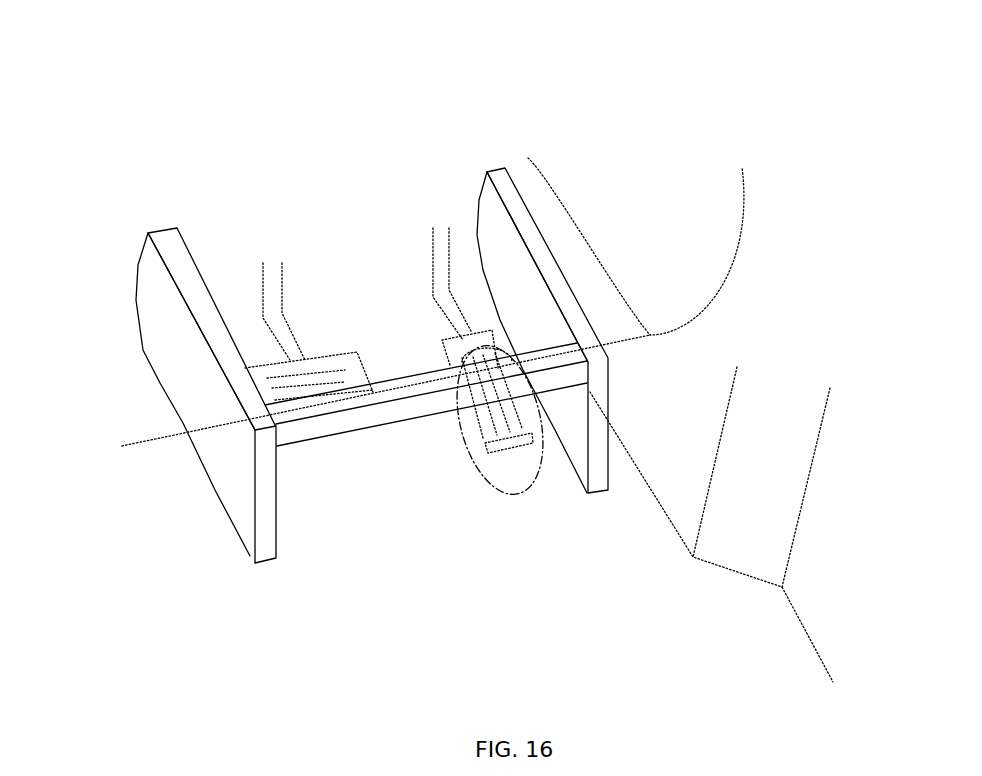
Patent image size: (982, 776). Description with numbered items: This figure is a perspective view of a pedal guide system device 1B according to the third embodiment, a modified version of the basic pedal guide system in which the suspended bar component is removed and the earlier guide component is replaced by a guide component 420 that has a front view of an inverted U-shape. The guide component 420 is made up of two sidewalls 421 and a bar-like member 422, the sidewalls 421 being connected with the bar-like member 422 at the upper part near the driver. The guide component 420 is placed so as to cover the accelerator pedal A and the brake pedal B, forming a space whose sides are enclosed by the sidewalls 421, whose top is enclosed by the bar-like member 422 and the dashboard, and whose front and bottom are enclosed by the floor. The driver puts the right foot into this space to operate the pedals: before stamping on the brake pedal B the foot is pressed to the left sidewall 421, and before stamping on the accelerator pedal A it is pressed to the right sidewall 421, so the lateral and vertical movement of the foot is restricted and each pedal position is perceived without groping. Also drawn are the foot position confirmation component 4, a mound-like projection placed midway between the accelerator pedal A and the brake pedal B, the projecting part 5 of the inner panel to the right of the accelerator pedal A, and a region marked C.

The pedal guide system device 1B is at (374, 323).
The guide component 420 is at (374, 381).
The sidewalls 421 is at (250, 556).
The bar-like member 422 is at (377, 430).
The foot position confirmation component 4 is at (417, 408).
The projecting part of the inner panel 5 is at (775, 450).
The accelerator pedal A is at (535, 485).
The brake pedal B is at (288, 425).
The region C is at (705, 217).